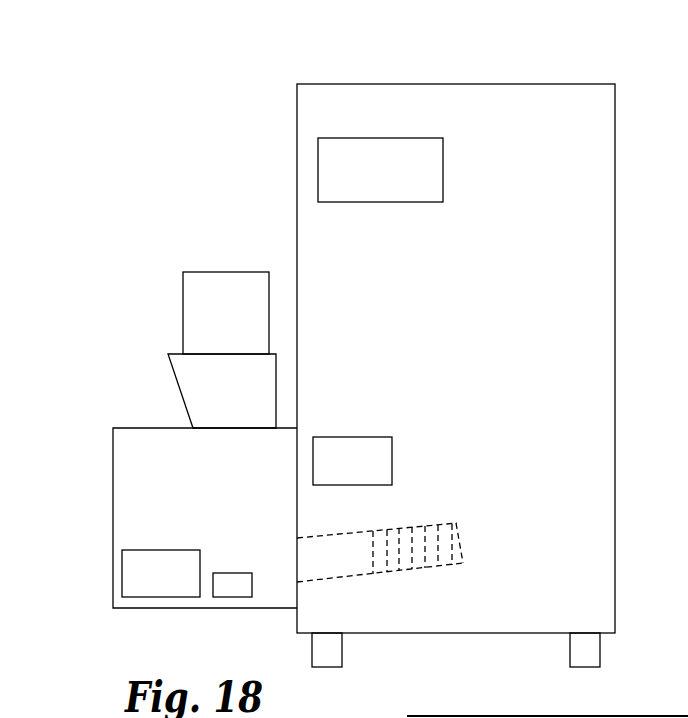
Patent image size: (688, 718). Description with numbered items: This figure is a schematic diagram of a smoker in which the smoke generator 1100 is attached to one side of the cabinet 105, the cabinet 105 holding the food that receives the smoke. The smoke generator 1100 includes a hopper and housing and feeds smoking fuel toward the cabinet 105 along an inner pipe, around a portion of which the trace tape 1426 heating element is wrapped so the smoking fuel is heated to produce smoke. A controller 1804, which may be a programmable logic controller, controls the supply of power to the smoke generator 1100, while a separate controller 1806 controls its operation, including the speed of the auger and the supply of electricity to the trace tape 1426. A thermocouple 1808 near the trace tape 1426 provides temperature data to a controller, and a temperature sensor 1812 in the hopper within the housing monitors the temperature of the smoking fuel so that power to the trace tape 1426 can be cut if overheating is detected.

The cabinet 105 is at (515, 278).
The smoke generator 1100 is at (101, 394).
The controller 1804 is at (408, 183).
The controller 1806 is at (242, 590).
The thermocouple 1808 is at (362, 458).
The temperature sensor 1812 is at (152, 587).
The trace tape 1426 is at (419, 565).